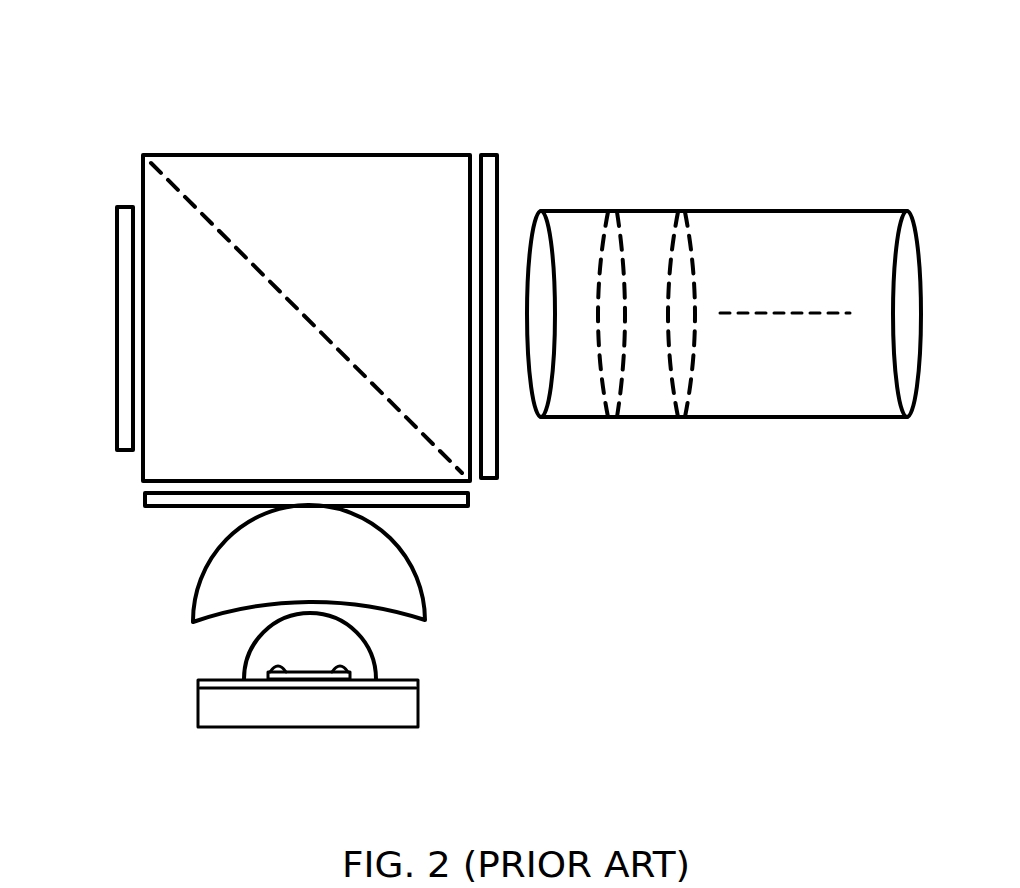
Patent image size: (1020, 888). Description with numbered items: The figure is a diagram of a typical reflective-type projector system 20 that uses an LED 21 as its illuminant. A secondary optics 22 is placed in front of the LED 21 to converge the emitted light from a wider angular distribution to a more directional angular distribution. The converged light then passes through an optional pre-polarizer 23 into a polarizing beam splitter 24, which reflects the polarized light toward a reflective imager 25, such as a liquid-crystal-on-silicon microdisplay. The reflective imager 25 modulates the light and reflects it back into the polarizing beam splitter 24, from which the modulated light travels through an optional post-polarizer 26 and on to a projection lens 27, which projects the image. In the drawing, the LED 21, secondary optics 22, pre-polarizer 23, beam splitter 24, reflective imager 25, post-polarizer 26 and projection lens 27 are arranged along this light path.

The reflective-type projector system 20 is at (746, 47).
The LED 21 is at (410, 660).
The secondary optics 22 is at (233, 567).
The pre-polarizer 23 is at (458, 497).
The polarizing beam splitter 24 is at (262, 178).
The reflective imager 25 is at (128, 232).
The post-polarizer 26 is at (487, 161).
The projection lens 27 is at (728, 390).